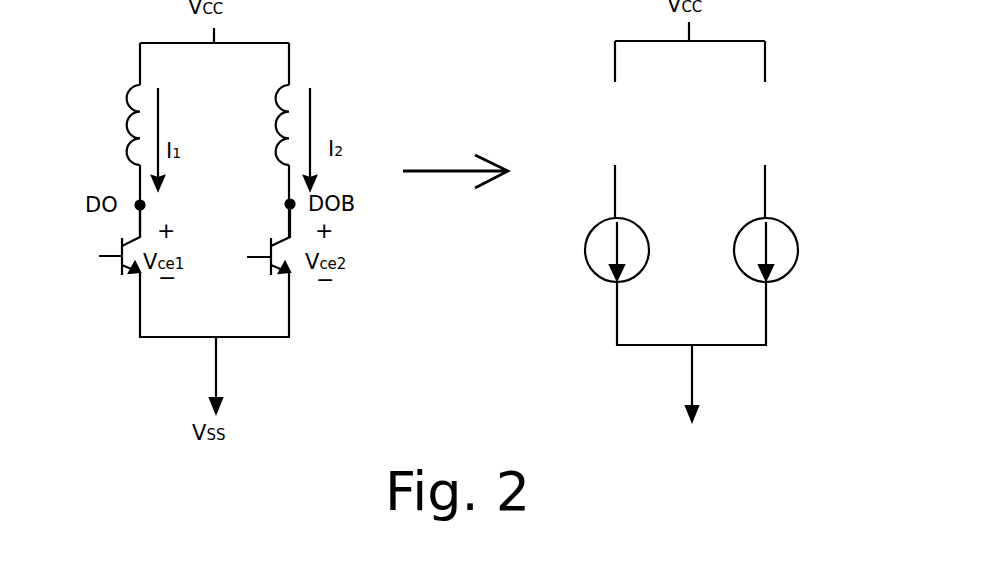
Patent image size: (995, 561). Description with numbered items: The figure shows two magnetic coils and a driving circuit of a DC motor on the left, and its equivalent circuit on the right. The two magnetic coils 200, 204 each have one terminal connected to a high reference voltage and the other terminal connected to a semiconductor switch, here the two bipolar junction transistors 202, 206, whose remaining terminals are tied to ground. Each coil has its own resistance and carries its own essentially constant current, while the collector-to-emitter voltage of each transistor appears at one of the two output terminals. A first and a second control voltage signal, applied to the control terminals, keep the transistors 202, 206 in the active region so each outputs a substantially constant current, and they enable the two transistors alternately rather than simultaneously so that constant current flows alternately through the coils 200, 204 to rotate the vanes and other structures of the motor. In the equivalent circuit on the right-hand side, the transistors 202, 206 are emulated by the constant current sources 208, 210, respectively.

The magnetic coil 200 is at (126, 110).
The bipolar junction transistor 202 is at (114, 263).
The magnetic coil 204 is at (298, 88).
The bipolar junction transistor 206 is at (292, 260).
The constant current source 208 is at (592, 271).
The constant current source 210 is at (792, 268).